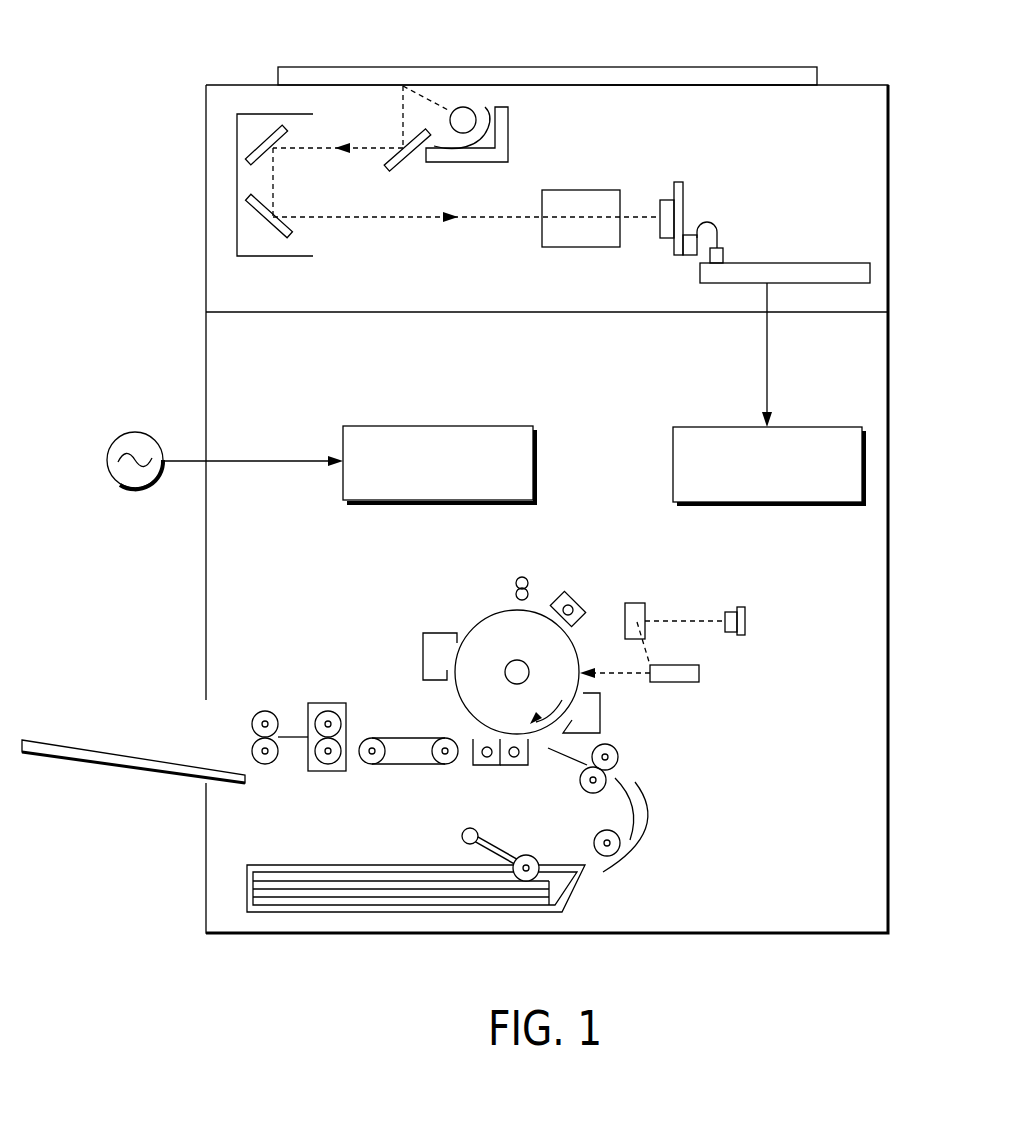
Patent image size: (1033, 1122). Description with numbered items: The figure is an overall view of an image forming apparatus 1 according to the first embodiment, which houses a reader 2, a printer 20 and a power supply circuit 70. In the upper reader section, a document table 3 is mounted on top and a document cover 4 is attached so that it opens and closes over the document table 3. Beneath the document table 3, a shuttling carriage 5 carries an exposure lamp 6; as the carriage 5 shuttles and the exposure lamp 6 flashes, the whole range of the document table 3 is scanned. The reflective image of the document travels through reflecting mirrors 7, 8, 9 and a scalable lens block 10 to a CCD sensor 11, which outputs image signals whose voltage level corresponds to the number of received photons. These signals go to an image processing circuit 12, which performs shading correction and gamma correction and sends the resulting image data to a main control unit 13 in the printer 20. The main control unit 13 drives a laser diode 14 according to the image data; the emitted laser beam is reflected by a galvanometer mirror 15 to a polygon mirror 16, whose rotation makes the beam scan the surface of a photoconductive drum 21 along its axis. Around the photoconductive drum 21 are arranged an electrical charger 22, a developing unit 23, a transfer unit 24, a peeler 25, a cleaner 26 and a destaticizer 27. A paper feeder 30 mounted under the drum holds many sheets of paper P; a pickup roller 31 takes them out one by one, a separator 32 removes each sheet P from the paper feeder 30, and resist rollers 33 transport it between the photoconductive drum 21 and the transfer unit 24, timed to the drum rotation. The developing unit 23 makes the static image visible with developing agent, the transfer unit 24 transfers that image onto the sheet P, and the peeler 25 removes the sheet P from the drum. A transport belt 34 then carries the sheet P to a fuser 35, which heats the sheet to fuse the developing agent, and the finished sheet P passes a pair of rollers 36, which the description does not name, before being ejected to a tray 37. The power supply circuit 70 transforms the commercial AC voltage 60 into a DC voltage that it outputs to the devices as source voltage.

The image forming apparatus 1 is at (871, 84).
The reader 2 is at (836, 104).
The document table 3 is at (701, 86).
The document cover 4 is at (673, 67).
The carriage 5 is at (508, 125).
The exposure lamp 6 is at (463, 106).
The reflecting mirror 7 is at (405, 166).
The reflecting mirror 8 is at (285, 130).
The reflecting mirror 9 is at (288, 233).
The scalable lens block 10 is at (600, 190).
The CCD sensor 11 is at (685, 194).
The image processing circuit 12 is at (805, 263).
The main control unit 13 is at (804, 427).
The laser diode 14 is at (742, 635).
The galvanometer mirror 15 is at (633, 603).
The polygon mirror 16 is at (688, 683).
The printer 20 is at (719, 779).
The photoconductive drum 21 is at (478, 615).
The electrical charger 22 is at (572, 595).
The developing unit 23 is at (600, 710).
The transfer unit 24 is at (520, 768).
The peeler 25 is at (482, 768).
The cleaner 26 is at (423, 652).
The destaticizer 27 is at (522, 577).
The paper feeder 30 is at (573, 893).
The pickup roller 31 is at (532, 857).
The separator 32 is at (596, 836).
The resist rollers 33 is at (619, 757).
The transport belt 34 is at (410, 767).
The fuser 35 is at (328, 703).
The discharge rollers 36 is at (265, 710).
The tray 37 is at (68, 746).
The commercial AC voltage 60 is at (135, 432).
The power supply circuit 70 is at (476, 426).
The sheet of paper P is at (350, 880).